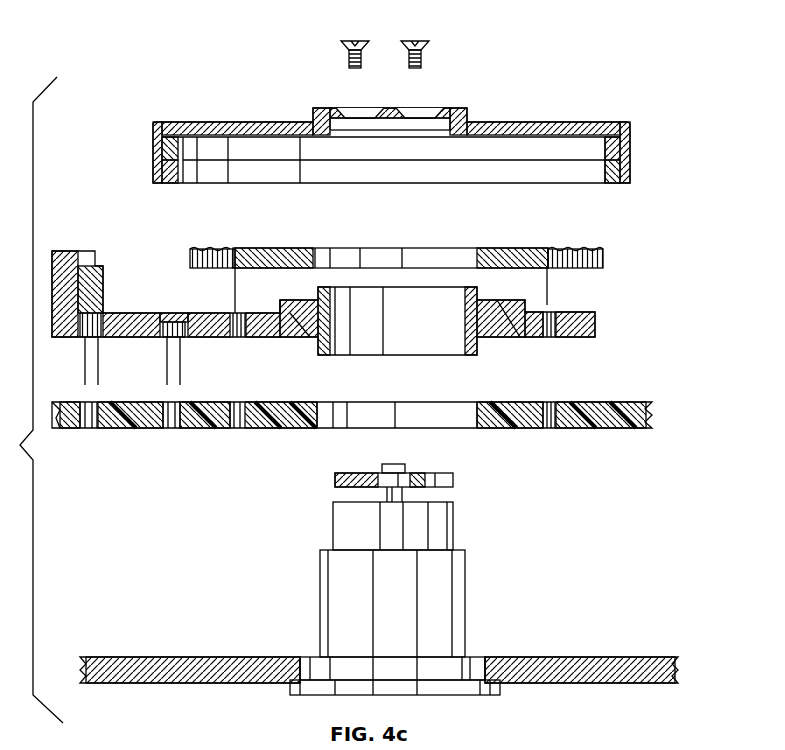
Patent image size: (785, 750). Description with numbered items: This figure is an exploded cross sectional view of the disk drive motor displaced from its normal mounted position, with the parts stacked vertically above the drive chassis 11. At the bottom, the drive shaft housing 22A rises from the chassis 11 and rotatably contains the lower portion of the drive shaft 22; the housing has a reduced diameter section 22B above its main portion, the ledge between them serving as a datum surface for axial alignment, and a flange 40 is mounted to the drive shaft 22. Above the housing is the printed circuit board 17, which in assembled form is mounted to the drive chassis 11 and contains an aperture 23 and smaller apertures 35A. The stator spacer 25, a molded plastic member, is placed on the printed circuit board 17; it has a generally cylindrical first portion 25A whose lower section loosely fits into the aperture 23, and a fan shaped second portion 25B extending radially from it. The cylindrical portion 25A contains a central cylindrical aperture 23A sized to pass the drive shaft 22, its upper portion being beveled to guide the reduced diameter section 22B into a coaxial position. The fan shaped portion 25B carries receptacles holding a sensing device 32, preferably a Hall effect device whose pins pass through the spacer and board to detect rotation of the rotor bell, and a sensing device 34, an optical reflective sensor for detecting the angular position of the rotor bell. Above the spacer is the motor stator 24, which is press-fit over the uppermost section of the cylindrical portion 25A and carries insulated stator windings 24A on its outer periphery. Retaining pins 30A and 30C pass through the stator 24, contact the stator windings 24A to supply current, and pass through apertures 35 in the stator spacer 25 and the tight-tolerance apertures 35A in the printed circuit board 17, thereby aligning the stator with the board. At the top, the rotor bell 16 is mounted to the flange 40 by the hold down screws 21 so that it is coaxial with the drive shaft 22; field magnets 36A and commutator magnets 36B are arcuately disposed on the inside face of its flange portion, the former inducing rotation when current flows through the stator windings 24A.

The hold down screws 21 is at (412, 40).
The rotor bell 16 is at (631, 152).
The field magnets 36A is at (160, 148).
The commutator magnets 36B is at (162, 172).
The motor stator 24 is at (427, 238).
The stator windings 24A is at (222, 234).
The retaining pin 30A is at (236, 280).
The retaining pin 30C is at (549, 284).
The stator spacer 25 is at (361, 319).
The sensing device 34 is at (104, 297).
The fan shaped second portion 25B is at (106, 340).
The sensing device 32 is at (174, 312).
The apertures 35 is at (237, 339).
The central cylindrical aperture 23A is at (366, 350).
The cylindrical first portion 25A is at (490, 339).
The printed circuit board 17 is at (372, 432).
The apertures 35A is at (238, 430).
The aperture 23 is at (465, 426).
The drive shaft 22 is at (412, 579).
The flange 40 is at (454, 480).
The reduced diameter section 22B is at (452, 530).
The drive shaft housing 22A is at (466, 586).
The drive chassis 11 is at (610, 655).